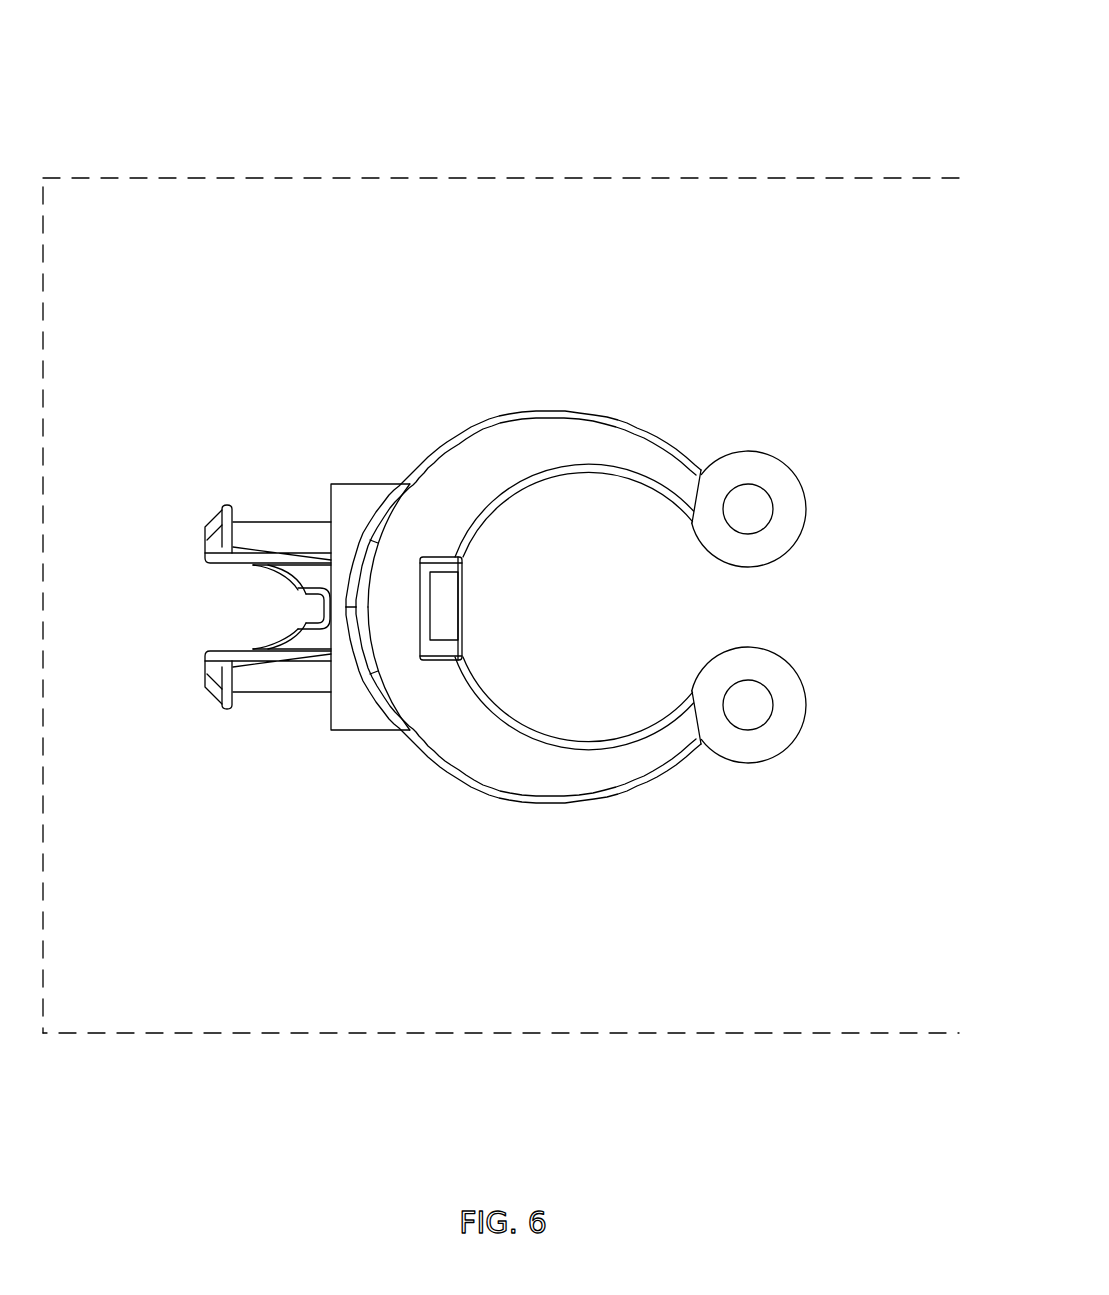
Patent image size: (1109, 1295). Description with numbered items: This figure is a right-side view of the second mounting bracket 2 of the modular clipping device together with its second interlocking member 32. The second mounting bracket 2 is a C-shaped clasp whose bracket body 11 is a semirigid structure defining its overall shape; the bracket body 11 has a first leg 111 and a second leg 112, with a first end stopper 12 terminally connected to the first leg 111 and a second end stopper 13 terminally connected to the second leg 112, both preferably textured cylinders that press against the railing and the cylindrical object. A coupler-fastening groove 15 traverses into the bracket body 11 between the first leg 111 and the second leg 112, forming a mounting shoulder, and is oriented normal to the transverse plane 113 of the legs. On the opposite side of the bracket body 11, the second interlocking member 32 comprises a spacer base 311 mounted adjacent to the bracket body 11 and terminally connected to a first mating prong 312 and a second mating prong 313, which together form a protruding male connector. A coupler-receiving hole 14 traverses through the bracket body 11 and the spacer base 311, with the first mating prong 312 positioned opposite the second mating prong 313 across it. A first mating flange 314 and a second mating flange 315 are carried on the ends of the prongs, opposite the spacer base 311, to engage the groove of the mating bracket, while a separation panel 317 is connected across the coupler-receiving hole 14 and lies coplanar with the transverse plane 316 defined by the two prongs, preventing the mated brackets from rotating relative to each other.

The second mounting bracket 2 is at (522, 132).
The bracket body 11 is at (599, 586).
The first end stopper 12 is at (785, 478).
The second end stopper 13 is at (795, 697).
The coupler-receiving hole 14 is at (314, 610).
The coupler-fastening groove 15 is at (452, 608).
The second interlocking member 32 is at (206, 308).
The first leg 111 is at (525, 428).
The second leg 112 is at (597, 779).
The transverse plane 113 is at (501, 524).
The spacer base 311 is at (363, 497).
The first mating prong 312 is at (290, 530).
The second mating prong 313 is at (297, 685).
The first mating flange 314 is at (218, 513).
The second mating flange 315 is at (213, 703).
The transverse plane 316 is at (807, 178).
The separation panel 317 is at (292, 583).